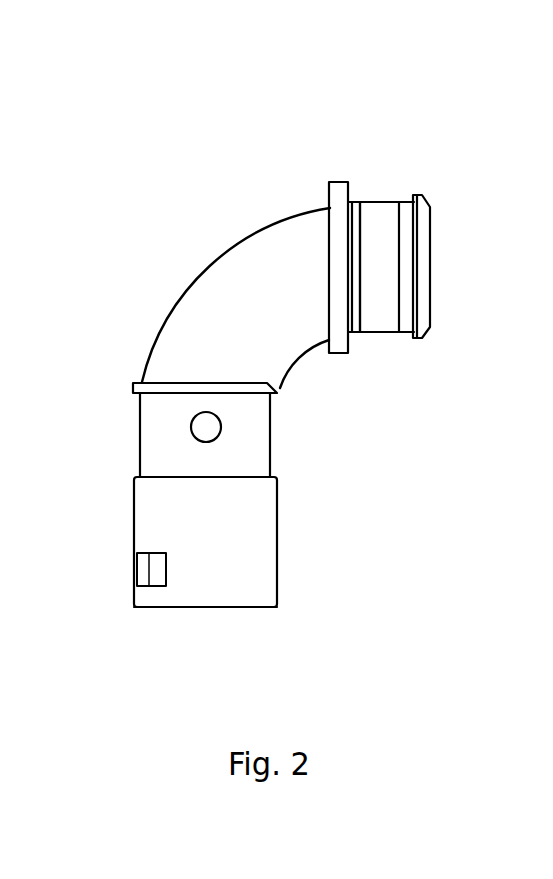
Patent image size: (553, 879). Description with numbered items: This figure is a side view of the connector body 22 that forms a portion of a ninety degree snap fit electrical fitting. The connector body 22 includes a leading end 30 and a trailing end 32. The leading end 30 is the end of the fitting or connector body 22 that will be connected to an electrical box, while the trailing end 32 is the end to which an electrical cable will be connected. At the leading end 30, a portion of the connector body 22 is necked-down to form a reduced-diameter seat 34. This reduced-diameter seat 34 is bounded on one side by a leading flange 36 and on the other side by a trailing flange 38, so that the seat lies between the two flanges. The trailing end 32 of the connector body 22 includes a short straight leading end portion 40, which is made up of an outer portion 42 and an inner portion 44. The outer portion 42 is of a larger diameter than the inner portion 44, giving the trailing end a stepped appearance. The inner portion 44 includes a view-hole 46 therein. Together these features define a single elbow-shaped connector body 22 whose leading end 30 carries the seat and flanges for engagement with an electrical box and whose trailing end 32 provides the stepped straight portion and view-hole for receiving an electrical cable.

The connector body 22 is at (139, 181).
The leading end 30 is at (430, 266).
The trailing end 32 is at (172, 607).
The reduced-diameter seat 34 is at (382, 202).
The leading flange 36 is at (415, 338).
The trailing flange 38 is at (335, 353).
The short straight leading end portion 40 is at (196, 495).
The outer portion 42 is at (234, 546).
The inner portion 44 is at (178, 438).
The view-hole 46 is at (207, 429).